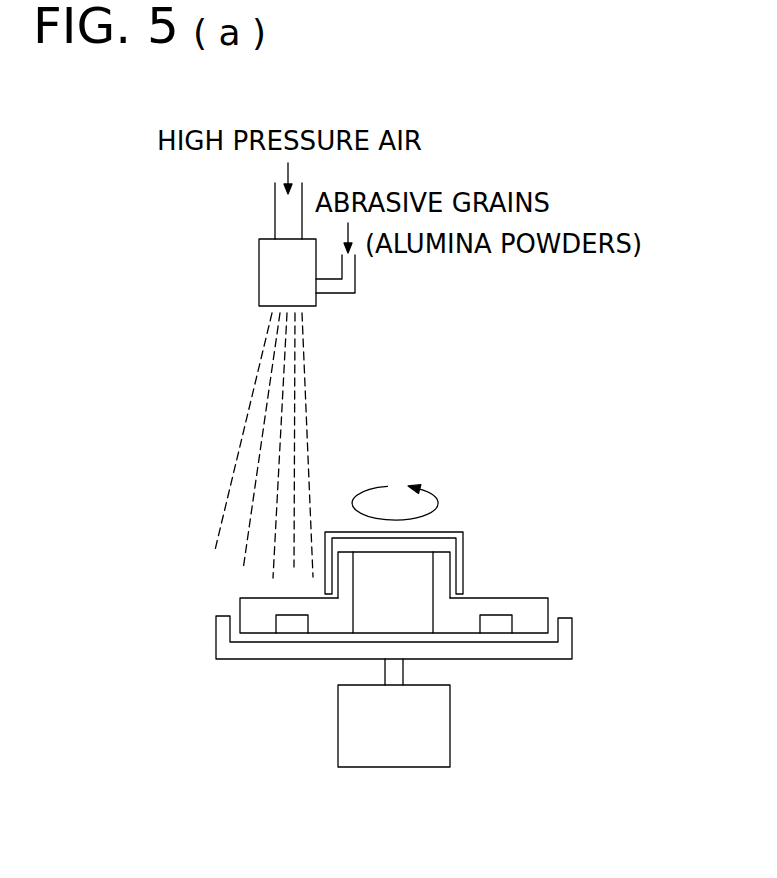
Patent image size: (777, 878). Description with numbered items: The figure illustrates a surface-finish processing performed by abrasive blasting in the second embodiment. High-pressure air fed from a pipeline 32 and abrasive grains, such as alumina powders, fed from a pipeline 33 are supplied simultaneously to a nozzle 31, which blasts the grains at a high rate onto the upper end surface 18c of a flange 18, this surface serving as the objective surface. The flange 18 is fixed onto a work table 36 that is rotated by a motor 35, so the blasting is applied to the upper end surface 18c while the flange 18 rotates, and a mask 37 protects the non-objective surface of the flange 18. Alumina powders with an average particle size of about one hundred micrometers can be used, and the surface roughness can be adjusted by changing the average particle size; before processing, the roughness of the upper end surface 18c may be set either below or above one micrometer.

The flange 18 is at (452, 606).
The upper end surface 18c is at (517, 598).
The nozzle 31 is at (259, 276).
The pipeline 32 is at (275, 207).
The pipeline 33 is at (355, 279).
The motor 35 is at (452, 728).
The work table 36 is at (541, 660).
The mask 37 is at (450, 531).